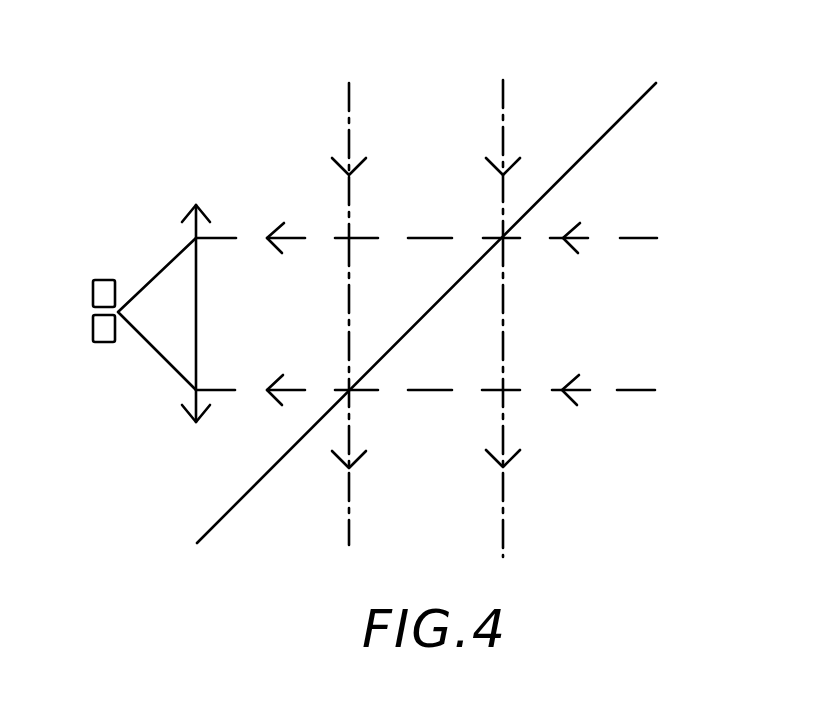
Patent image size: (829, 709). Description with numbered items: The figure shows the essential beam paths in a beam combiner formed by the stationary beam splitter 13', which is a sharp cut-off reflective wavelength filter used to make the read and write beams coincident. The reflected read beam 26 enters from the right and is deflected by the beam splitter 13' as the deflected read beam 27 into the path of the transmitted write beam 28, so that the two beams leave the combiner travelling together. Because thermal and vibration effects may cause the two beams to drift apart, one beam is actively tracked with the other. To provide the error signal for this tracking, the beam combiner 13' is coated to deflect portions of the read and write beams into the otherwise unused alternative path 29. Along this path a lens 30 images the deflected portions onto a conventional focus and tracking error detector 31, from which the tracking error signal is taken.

The stationary beam splitter 13' is at (394, 313).
The reflected read beam 26 is at (625, 390).
The deflected read beam 27 is at (349, 533).
The transmitted write beam 28 is at (350, 102).
The alternative path 29 is at (240, 243).
The lens 30 is at (182, 413).
The focus and tracking error detector 31 is at (102, 338).